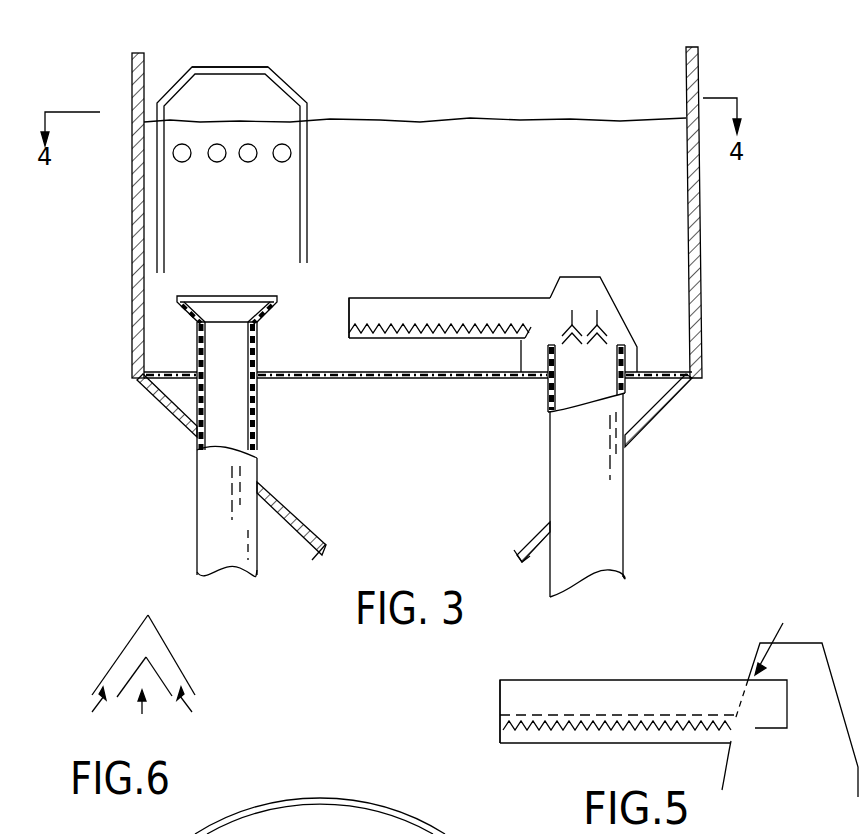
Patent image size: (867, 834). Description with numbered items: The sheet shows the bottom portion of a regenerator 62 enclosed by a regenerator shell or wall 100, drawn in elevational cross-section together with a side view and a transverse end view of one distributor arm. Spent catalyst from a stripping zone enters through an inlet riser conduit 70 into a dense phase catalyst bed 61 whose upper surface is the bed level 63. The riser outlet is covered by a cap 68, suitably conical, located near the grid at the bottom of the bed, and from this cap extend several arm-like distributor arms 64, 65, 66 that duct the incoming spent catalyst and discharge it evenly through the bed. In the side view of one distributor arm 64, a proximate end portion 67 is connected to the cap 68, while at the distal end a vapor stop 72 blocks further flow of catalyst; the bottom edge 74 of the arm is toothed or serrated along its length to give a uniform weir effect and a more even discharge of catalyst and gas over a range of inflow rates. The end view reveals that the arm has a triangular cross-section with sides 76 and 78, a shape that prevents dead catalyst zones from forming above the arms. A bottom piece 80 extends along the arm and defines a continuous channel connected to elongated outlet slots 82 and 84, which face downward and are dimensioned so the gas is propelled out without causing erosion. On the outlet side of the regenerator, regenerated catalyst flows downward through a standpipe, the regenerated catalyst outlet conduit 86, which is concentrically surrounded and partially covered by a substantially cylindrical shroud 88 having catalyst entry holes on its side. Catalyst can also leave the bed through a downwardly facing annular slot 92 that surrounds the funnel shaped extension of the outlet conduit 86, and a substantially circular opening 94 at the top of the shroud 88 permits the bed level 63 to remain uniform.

In FIG. 3, the dense phase catalyst bed 61 is at (418, 168).
In FIG. 3, the regenerator 62 is at (379, 304).
In FIG. 3, the bed level 63 is at (513, 118).
In FIG. 3, the distributor arm 64 is at (441, 308).
In FIG. 5, the distributor arm 64 is at (613, 715).
In FIG. 3, the distributor arm 65 is at (571, 311).
In FIG. 3, the distributor arm 66 is at (598, 318).
In FIG. 5, the proximate end portion 67 is at (769, 640).
In FIG. 3, the cap 68 is at (560, 277).
In FIG. 5, the cap 68 is at (749, 659).
In FIG. 3, the inlet riser conduit 70 is at (550, 442).
In FIG. 3, the vapor stop 72 is at (349, 305).
In FIG. 5, the vapor stop 72 is at (500, 690).
In FIG. 3, the bottom edge 74 is at (430, 330).
In FIG. 5, the bottom edge 74 is at (636, 730).
In FIG. 6, the side 76 is at (118, 657).
In FIG. 6, the side 78 is at (168, 655).
In FIG. 6, the bottom piece 80 is at (142, 714).
In FIG. 5, the bottom piece 80 is at (502, 744).
In FIG. 6, the elongated outlet slot 82 is at (98, 704).
In FIG. 6, the elongated outlet slot 84 is at (183, 704).
In FIG. 3, the regenerated catalyst outlet conduit 86 is at (197, 498).
In FIG. 3, the shroud 88 is at (257, 145).
In FIG. 3, the annular slot 92 is at (292, 295).
In FIG. 3, the circular opening 94 is at (213, 67).
In FIG. 3, the regenerator shell or wall 100 is at (135, 200).